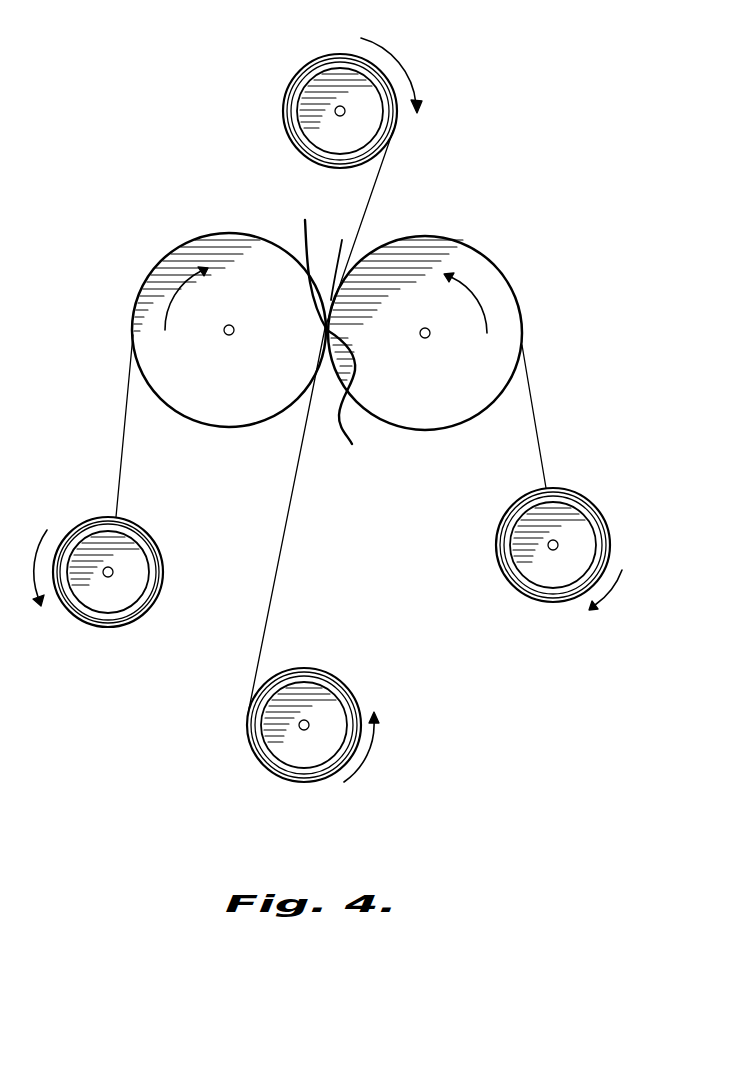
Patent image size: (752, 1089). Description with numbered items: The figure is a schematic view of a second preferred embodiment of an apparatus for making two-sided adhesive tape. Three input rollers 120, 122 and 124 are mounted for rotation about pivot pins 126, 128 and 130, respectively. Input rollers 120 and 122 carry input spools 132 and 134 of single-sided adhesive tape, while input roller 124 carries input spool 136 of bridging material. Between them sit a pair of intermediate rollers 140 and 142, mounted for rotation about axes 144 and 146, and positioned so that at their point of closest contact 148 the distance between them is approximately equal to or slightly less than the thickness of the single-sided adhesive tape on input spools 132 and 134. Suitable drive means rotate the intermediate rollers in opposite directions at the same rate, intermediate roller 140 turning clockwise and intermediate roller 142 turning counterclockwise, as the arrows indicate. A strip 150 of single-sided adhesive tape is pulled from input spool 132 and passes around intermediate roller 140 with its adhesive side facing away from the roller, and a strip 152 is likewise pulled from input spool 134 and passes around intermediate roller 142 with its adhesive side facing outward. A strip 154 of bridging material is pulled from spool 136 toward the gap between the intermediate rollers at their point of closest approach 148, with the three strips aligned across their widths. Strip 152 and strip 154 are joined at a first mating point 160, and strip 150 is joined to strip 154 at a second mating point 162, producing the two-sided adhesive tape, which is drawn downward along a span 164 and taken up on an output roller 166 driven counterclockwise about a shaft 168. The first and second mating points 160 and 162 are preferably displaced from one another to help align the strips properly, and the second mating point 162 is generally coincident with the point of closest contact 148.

The input roller 120 is at (138, 558).
The input roller 122 is at (520, 537).
The input roller 124 is at (312, 92).
The pivot pin 126 is at (108, 580).
The pivot pin 128 is at (553, 553).
The pivot pin 130 is at (339, 105).
The input spool 132 is at (158, 599).
The input spool 134 is at (590, 506).
The input spool 136 is at (288, 115).
The intermediate roller 140 is at (198, 248).
The intermediate roller 142 is at (497, 278).
The axis 144 is at (230, 322).
The axis 146 is at (426, 326).
The point of closest contact 148 is at (309, 263).
The strip of single-sided adhesive tape 150 is at (128, 436).
The strip of single-sided adhesive tape 152 is at (537, 420).
The strip of bridging material 154 is at (377, 196).
The first mating point 160 is at (344, 258).
The second mating point 162 is at (359, 395).
The web span to lower roller 164 is at (288, 530).
The output roller 166 is at (330, 718).
The shaft 168 is at (306, 717).